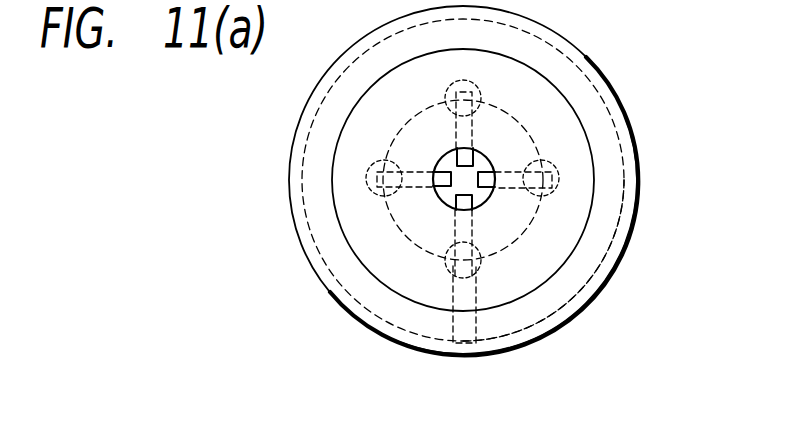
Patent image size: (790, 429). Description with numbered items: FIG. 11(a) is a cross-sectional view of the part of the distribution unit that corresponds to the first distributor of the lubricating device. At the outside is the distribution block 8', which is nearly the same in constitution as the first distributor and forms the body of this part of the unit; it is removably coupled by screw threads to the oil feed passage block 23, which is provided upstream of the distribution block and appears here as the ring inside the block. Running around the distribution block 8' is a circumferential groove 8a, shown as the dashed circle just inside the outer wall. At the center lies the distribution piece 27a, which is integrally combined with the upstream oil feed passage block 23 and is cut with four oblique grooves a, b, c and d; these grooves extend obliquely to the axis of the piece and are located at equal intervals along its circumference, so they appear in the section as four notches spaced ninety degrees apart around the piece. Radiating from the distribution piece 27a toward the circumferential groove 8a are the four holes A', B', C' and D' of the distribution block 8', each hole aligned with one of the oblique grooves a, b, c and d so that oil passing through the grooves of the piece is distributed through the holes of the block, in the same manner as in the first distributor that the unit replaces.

The distribution block 8' is at (498, 180).
The circumferential groove 8a is at (573, 300).
The oil feed passage block 23 is at (590, 200).
The distribution piece 27a is at (627, 146).
The oblique groove a is at (441, 163).
The oblique groove b is at (467, 160).
The oblique groove c is at (488, 201).
The oblique groove d is at (453, 209).
The hole A' is at (392, 153).
The hole B' is at (492, 113).
The hole C' is at (536, 206).
The hole D' is at (440, 276).